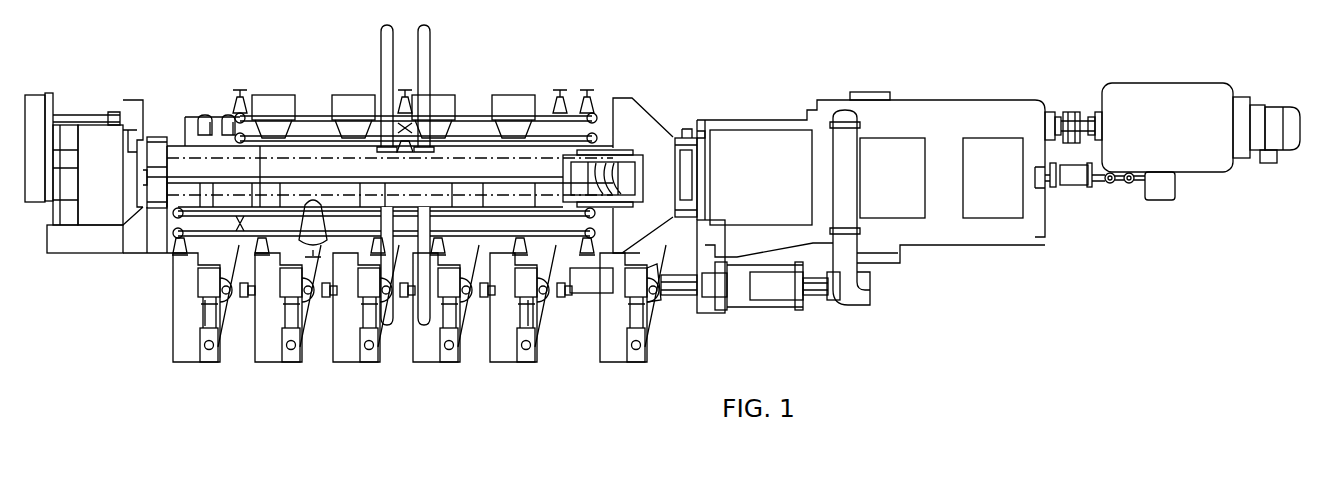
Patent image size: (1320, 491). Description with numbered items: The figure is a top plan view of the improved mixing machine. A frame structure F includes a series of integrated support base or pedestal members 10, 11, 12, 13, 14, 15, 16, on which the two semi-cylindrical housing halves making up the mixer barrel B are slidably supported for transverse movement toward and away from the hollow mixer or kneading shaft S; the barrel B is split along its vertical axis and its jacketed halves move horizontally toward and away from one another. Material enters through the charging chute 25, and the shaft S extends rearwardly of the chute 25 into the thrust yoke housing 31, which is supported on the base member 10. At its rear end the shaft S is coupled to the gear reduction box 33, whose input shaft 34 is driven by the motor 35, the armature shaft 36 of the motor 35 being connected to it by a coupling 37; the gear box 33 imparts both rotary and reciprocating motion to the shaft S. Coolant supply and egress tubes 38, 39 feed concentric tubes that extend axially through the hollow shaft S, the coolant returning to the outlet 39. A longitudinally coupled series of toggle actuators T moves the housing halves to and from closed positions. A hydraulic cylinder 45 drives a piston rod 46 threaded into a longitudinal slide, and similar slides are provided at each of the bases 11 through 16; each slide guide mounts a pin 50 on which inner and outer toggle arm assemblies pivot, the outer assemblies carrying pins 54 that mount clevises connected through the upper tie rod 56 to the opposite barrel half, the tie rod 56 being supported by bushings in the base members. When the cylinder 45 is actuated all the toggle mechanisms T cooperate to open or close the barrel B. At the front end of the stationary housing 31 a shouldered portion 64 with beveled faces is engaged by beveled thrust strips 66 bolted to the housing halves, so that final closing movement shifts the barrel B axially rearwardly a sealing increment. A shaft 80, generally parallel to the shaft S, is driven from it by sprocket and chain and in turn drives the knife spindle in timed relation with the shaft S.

The support base member 10 is at (712, 314).
The support base member 11 is at (630, 362).
The support base member 12 is at (520, 362).
The support base member 13 is at (443, 362).
The support base member 14 is at (363, 362).
The support base member 15 is at (285, 362).
The support base member 16 is at (203, 362).
The material charging chute 25 is at (644, 173).
The thrust yoke housing 31 is at (760, 119).
The gear reduction box 33 is at (949, 118).
The input shaft 34 is at (1052, 112).
The motor 35 is at (1165, 98).
The armature shaft 36 is at (1090, 116).
The coupling 37 is at (1070, 112).
The coolant supply tube 38 is at (1128, 186).
The coolant egress tube 39 is at (1108, 186).
The hydraulic cylinder 45 is at (757, 302).
The piston rod 46 is at (683, 297).
The pin 50 is at (652, 272).
The outer pin 54 is at (530, 349).
The upper tie rod 56 is at (205, 313).
The shouldered portion 64 is at (686, 130).
The beveled thrust plate 66 is at (702, 130).
The shaft 80 is at (85, 116).
The mixer barrel B is at (482, 156).
The mixer shaft S is at (602, 170).
The frame structure F is at (907, 95).
The toggle actuator T is at (224, 341).